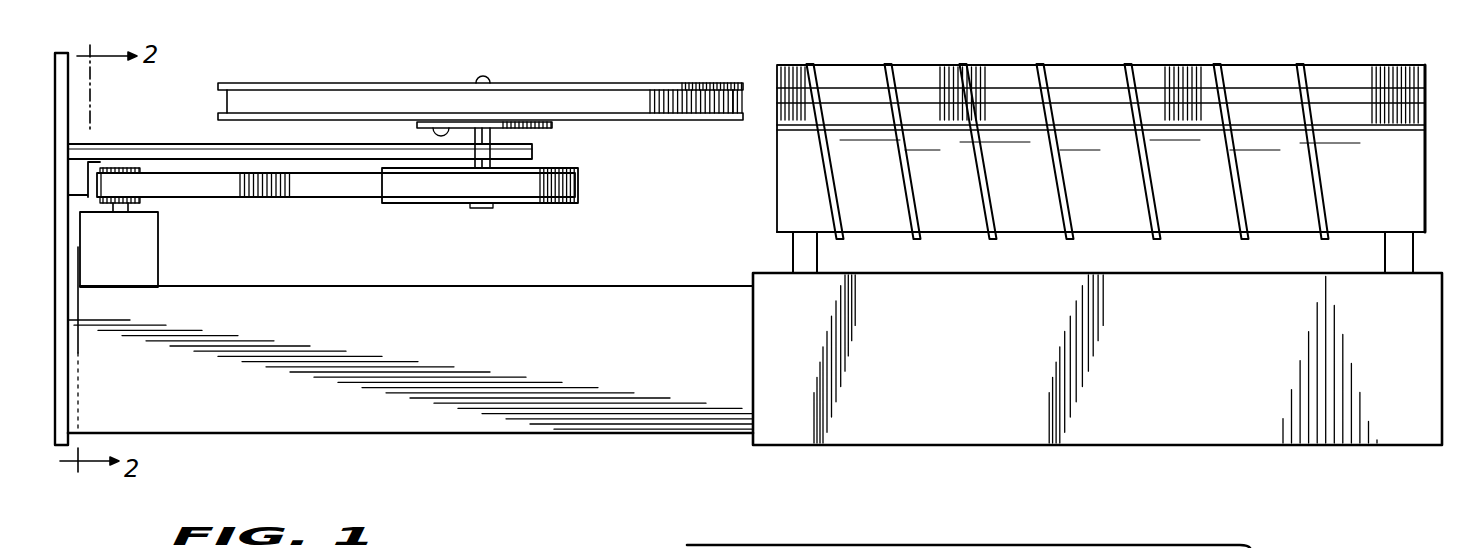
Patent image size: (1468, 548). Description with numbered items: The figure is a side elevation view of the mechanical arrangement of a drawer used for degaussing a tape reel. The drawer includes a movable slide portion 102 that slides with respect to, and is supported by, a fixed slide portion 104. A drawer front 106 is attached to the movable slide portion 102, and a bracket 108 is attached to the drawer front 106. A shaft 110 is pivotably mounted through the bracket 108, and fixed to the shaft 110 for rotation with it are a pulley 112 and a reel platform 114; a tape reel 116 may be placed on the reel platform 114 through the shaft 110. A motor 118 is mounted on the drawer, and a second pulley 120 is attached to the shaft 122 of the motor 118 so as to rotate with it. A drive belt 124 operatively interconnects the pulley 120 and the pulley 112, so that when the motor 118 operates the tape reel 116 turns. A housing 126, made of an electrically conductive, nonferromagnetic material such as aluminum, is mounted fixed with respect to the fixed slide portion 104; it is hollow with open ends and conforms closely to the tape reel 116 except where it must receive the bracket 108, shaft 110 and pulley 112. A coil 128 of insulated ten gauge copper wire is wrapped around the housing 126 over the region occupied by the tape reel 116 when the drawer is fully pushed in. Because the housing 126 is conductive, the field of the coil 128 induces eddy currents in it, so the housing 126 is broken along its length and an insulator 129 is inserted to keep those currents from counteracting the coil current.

The movable slide portion 102 is at (566, 412).
The fixed slide portion 104 is at (1210, 432).
The drawer front 106 is at (60, 447).
The bracket 108 is at (197, 143).
The shaft 110 is at (493, 136).
The pulley 112 is at (531, 204).
The reel platform 114 is at (440, 128).
The tape reel 116 is at (698, 80).
The motor 118 is at (148, 266).
The pulley 120 is at (122, 201).
The shaft 122 is at (116, 166).
The drive belt 124 is at (328, 185).
The housing 126 is at (1426, 76).
The coil 128 is at (1165, 247).
The insulator 129 is at (1358, 95).